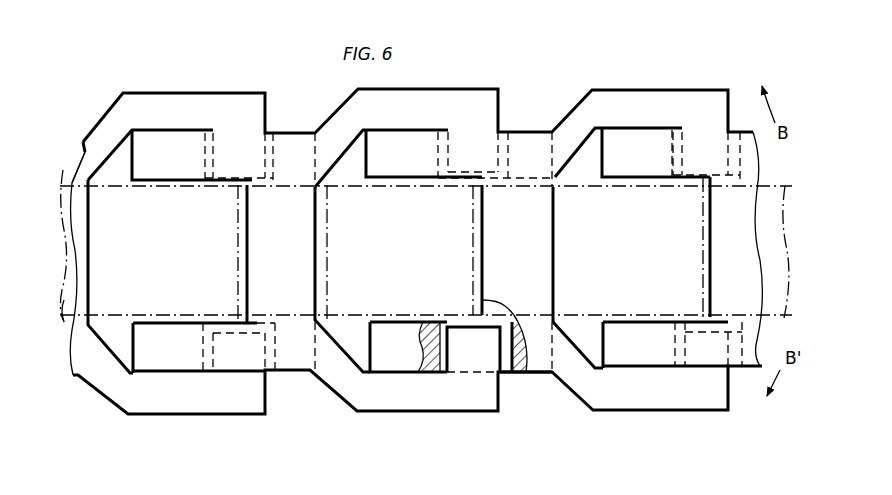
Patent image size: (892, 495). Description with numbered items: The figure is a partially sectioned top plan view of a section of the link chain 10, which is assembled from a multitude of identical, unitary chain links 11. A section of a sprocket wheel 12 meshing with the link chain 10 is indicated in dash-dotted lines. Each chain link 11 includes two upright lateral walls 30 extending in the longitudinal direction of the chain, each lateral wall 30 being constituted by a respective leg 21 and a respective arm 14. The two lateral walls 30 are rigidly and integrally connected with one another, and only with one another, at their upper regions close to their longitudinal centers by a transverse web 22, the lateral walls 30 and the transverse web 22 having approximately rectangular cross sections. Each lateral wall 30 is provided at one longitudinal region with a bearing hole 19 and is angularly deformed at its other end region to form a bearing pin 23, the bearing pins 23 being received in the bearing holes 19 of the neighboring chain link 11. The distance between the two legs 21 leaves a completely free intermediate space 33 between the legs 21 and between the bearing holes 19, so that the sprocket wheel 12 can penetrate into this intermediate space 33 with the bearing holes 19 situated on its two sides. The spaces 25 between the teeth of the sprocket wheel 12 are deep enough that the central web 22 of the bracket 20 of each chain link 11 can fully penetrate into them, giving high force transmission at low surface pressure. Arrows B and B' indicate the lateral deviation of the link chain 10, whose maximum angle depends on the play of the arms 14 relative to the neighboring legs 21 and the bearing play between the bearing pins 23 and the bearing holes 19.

The link chain 10 is at (122, 426).
The chain link 11 is at (168, 416).
The sprocket wheel 12 is at (57, 178).
The arm 14 is at (258, 112).
The bearing hole 19 is at (497, 373).
The bracket 20 is at (303, 253).
The leg 21 is at (402, 182).
The transverse web 22 is at (238, 268).
The bearing pin 23 is at (462, 357).
The space 25 is at (243, 217).
The lateral wall 30 is at (343, 112).
The intermediate space 33 is at (683, 277).